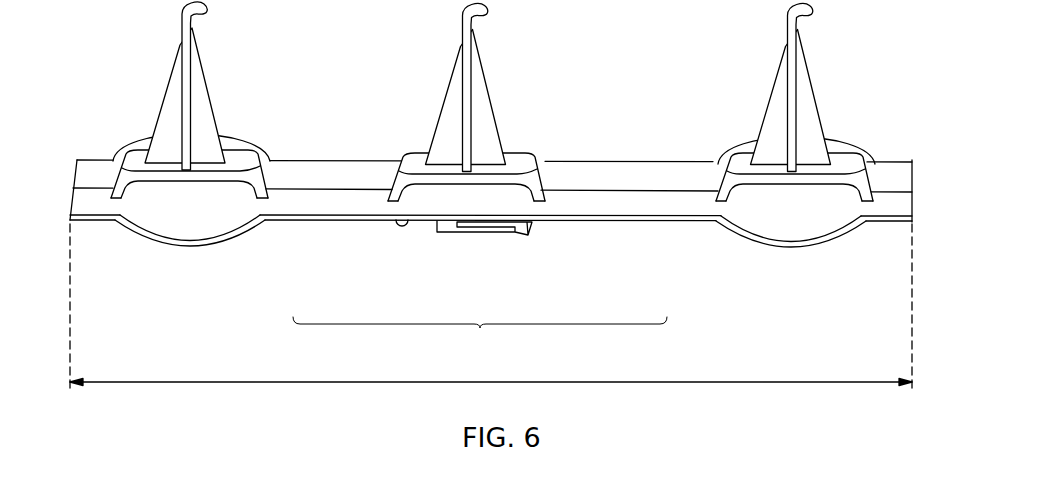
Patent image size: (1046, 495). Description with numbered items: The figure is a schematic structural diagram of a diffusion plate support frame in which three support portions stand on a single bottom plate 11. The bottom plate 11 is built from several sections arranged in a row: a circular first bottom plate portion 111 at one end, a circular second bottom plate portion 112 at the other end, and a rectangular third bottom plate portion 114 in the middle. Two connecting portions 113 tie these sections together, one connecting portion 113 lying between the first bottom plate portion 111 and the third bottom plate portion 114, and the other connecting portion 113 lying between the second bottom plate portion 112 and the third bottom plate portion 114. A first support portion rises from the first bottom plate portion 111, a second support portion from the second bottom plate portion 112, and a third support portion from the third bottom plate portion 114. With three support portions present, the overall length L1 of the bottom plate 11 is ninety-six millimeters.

The bottom plate 11 is at (491, 259).
The first bottom plate portion 111 is at (198, 246).
The second bottom plate portion 112 is at (780, 247).
The connecting portion 113 is at (308, 207).
The third bottom plate portion 114 is at (470, 206).
The length of the bottom plate L1 is at (491, 316).